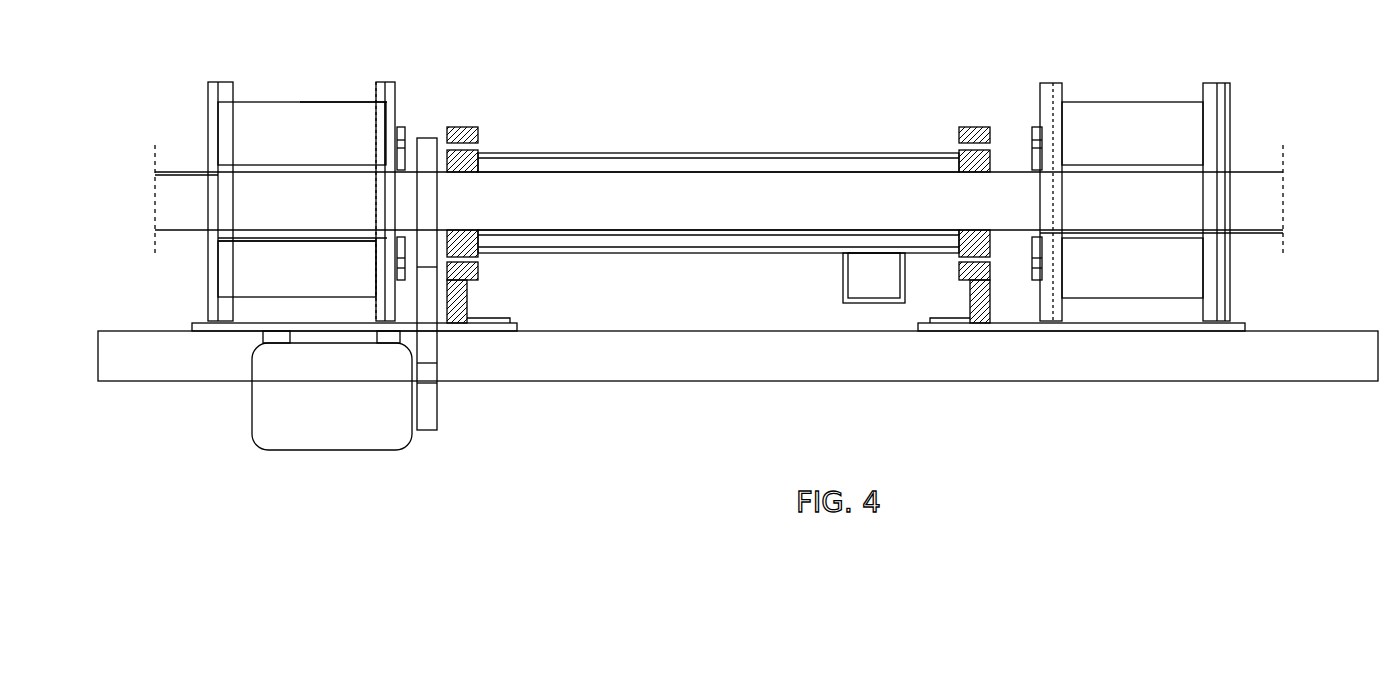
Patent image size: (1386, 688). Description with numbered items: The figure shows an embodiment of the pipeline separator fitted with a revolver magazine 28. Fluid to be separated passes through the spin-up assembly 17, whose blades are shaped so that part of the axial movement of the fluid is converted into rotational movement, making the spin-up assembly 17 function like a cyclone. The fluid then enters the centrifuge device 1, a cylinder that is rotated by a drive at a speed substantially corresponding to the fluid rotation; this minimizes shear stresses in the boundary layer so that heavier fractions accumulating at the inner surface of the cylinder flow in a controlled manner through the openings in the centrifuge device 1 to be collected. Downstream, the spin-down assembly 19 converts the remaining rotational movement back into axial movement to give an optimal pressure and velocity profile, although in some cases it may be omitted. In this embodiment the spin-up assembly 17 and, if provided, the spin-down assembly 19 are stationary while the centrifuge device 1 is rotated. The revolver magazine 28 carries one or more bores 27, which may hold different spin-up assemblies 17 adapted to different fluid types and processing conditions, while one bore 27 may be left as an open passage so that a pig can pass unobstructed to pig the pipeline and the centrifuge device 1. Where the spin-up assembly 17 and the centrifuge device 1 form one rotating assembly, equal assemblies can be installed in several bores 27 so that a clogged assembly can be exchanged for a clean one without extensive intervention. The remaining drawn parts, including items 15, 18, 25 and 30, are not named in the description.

The centrifuge device 1 is at (719, 223).
The roll edge 15 is at (332, 232).
The spin-up assembly 17 is at (280, 118).
The second roll lower portion 18 is at (1125, 202).
The spin-down assembly 19 is at (1127, 120).
The roll flange 25 is at (337, 110).
The bore 27 is at (242, 288).
The revolver magazine 28 is at (218, 117).
The mounting plate 30 is at (387, 100).